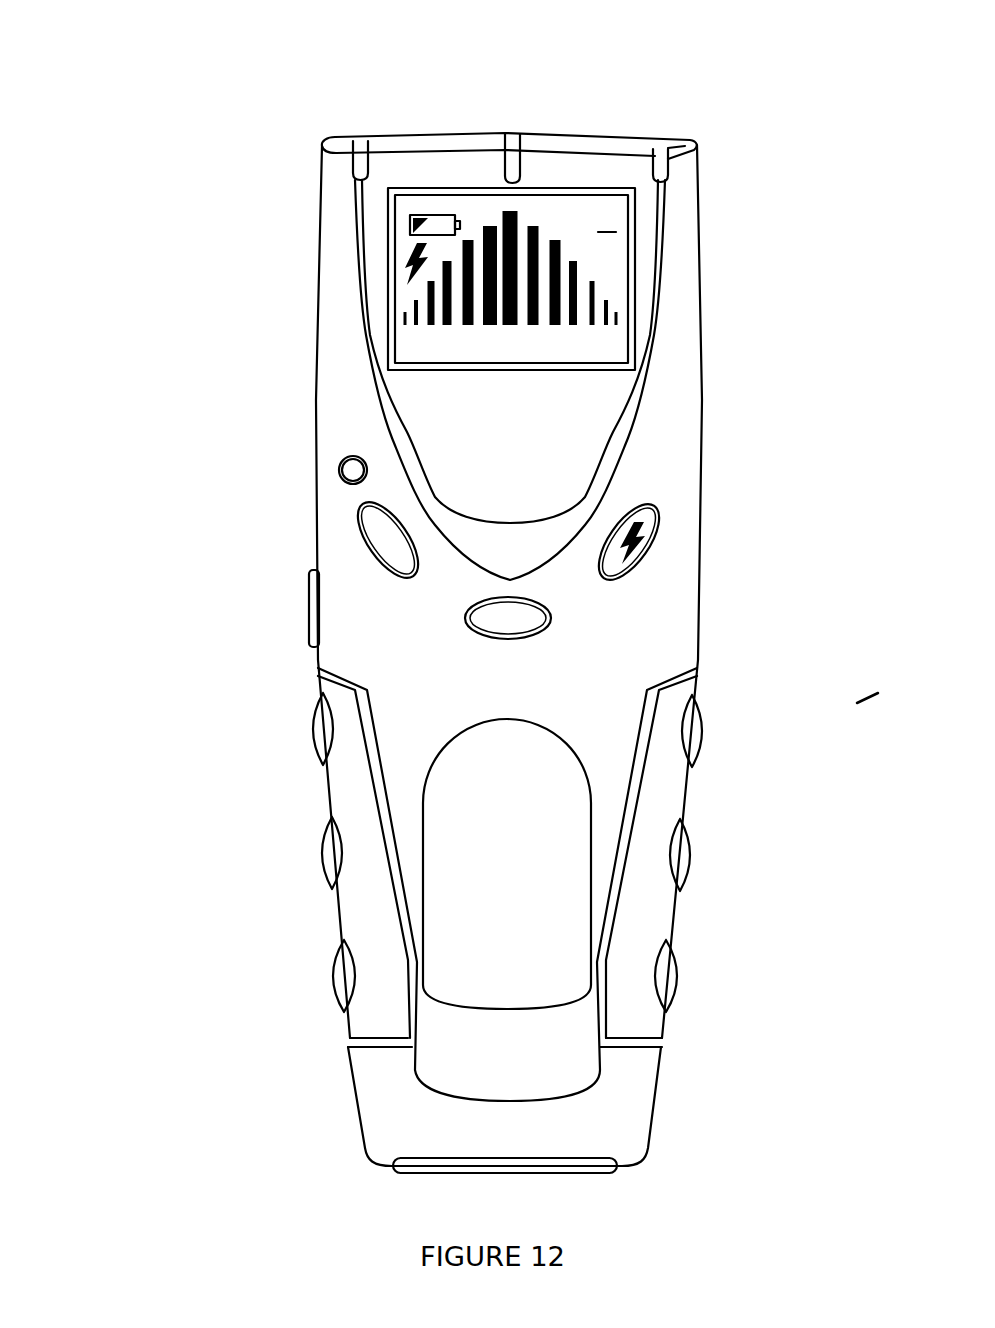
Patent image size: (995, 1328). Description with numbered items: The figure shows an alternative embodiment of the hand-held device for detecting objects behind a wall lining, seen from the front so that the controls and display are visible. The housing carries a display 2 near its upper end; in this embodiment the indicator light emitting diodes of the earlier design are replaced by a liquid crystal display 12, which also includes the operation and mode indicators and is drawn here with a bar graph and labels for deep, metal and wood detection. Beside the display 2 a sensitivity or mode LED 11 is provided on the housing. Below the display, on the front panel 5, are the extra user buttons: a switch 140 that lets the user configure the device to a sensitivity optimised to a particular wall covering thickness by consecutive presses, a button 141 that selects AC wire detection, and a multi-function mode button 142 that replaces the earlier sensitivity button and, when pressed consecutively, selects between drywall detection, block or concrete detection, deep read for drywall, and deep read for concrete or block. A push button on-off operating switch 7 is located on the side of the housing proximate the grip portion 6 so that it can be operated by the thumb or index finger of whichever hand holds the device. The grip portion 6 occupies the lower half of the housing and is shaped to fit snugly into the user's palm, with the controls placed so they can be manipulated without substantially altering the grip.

The display area 2 is at (556, 414).
The front panel 5 is at (332, 290).
The grip portion 6 is at (160, 831).
The push button on-off operating switch 7 is at (307, 613).
The sensitivity (mode) LED 11 is at (352, 468).
The display screen 12 is at (560, 222).
The switch 140 is at (362, 526).
The button 141 is at (657, 518).
The multi-function mode push button 142 is at (467, 625).